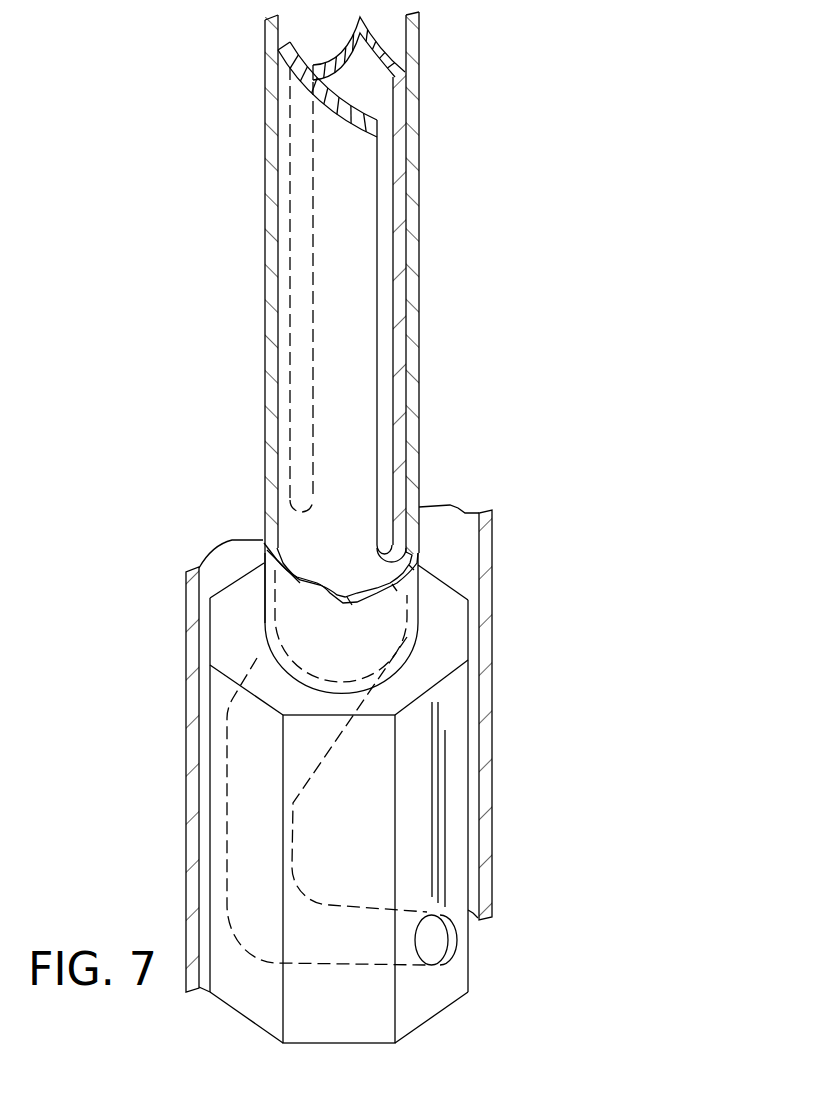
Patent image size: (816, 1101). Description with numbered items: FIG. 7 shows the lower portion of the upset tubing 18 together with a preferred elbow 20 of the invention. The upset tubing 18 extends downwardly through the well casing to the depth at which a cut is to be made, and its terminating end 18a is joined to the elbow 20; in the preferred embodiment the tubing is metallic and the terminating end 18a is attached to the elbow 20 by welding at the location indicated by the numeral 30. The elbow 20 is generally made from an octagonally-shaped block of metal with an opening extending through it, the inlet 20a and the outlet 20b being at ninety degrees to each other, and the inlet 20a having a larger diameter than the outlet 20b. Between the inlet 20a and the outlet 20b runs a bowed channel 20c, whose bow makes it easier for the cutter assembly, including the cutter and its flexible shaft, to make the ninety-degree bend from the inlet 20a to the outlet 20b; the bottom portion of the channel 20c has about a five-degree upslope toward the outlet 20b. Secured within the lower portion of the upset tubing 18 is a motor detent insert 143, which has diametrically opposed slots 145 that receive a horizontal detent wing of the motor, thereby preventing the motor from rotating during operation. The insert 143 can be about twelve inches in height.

The upset tubing 18 is at (420, 32).
The motor detent insert 143 is at (342, 153).
The diametrically opposed slots 145 is at (298, 160).
The welding location 30 is at (263, 648).
The terminating end 18a is at (443, 607).
The inlet 20a is at (355, 678).
The elbow 20 is at (453, 733).
The bowed channel 20c is at (363, 935).
The outlet 20b is at (447, 950).